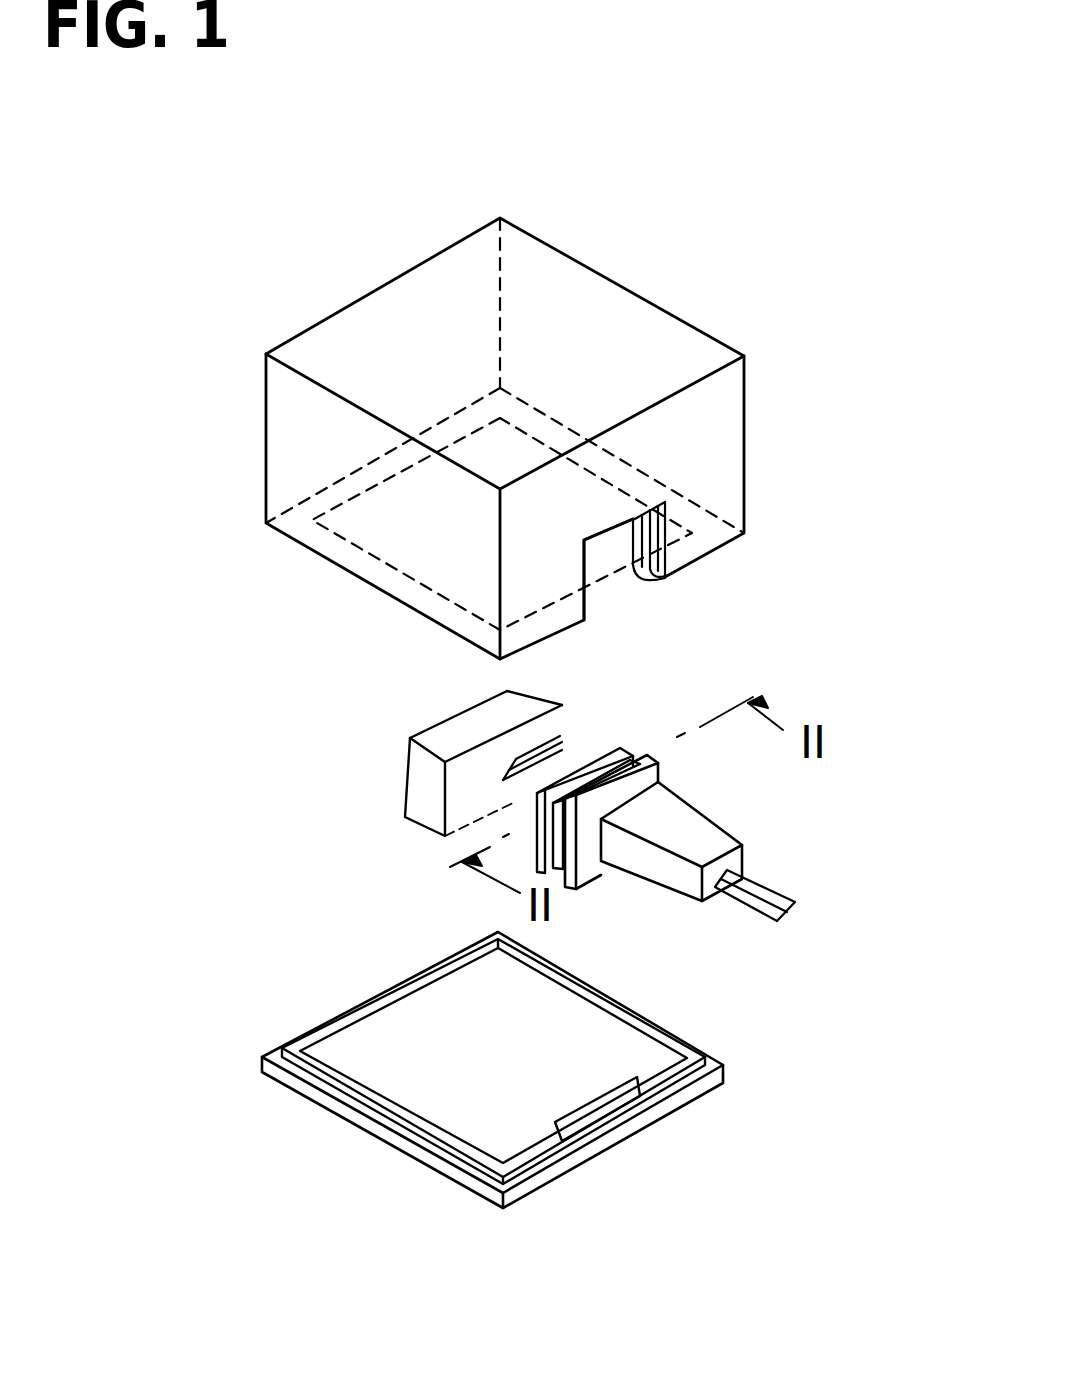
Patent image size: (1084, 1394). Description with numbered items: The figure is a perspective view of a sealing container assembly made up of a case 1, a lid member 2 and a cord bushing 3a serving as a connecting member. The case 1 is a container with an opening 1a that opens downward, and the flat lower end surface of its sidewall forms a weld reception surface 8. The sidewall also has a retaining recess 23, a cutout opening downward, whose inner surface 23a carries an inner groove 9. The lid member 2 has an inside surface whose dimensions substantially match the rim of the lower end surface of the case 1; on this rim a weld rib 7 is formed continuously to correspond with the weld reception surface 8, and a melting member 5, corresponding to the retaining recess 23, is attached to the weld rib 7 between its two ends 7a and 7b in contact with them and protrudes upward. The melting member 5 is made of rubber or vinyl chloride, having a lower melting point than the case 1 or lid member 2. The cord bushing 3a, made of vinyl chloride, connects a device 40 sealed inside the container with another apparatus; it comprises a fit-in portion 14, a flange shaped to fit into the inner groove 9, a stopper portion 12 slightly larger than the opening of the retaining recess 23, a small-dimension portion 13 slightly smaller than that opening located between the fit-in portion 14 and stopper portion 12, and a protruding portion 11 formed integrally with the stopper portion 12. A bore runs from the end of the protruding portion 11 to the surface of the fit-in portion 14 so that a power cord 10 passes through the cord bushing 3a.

The case 1 is at (664, 354).
The opening 1a is at (423, 535).
The lid member 2 is at (350, 1118).
The cord bushing 3a is at (690, 840).
The melting member 5 is at (595, 1115).
The weld rib 7 is at (430, 1145).
The end of weld rib 7a is at (515, 1200).
The end of weld rib 7b is at (722, 1078).
The weld reception surface 8 is at (407, 590).
The inner groove 9 is at (632, 533).
The power cord 10 is at (531, 778).
The protruding portion 11 is at (685, 885).
The stopper portion 12 is at (592, 873).
The small-dimension portion 13 is at (608, 750).
The fit-in portion 14 is at (575, 748).
The retaining recess 23 is at (610, 577).
The inner surface 23a is at (665, 579).
The device 40 is at (420, 786).